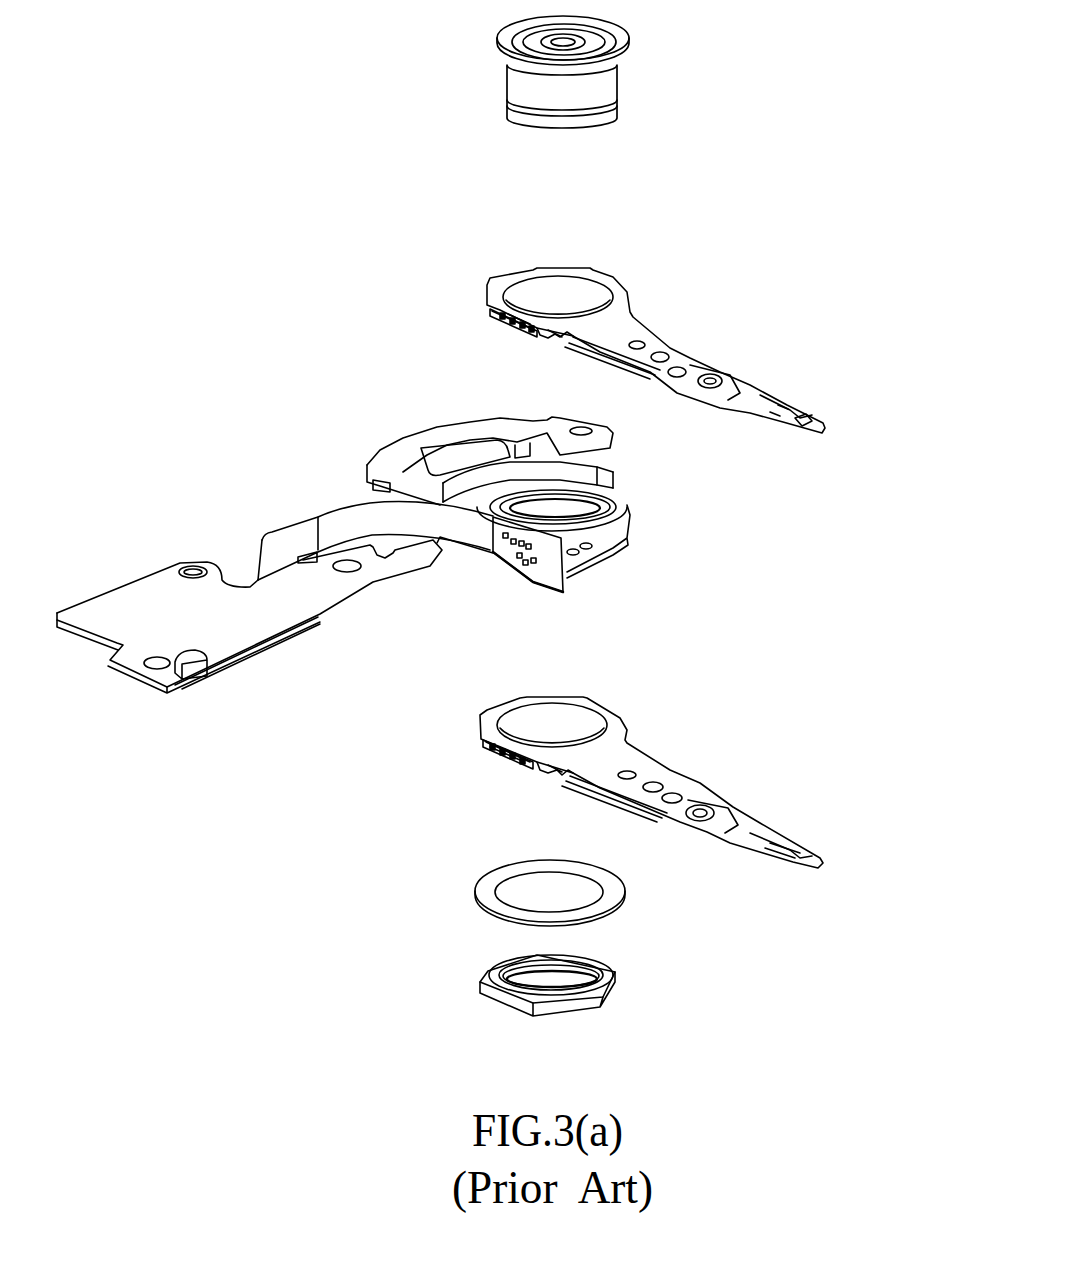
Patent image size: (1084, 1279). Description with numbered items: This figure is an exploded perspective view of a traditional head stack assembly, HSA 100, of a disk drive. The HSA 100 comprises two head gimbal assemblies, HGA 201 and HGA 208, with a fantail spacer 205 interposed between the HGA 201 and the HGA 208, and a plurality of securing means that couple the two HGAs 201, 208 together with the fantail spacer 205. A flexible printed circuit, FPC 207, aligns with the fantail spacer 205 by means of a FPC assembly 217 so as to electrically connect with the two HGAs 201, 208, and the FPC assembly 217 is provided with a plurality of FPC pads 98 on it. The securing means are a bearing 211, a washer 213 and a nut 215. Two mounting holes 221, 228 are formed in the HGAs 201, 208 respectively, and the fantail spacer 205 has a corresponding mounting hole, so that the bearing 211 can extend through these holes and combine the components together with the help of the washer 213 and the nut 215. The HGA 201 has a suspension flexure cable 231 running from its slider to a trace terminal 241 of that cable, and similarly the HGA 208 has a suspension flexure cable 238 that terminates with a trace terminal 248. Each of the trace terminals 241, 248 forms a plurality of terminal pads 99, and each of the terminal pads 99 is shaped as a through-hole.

The HSA 100 is at (240, 132).
The head gimbal assembly 201 is at (665, 509).
The fantail spacer 205 is at (400, 447).
The flexible printed circuit 207 is at (380, 520).
The head gimbal assembly 208 is at (623, 776).
The bearing 211 is at (585, 90).
The washer 213 is at (613, 892).
The nut 215 is at (620, 985).
The FPC assembly 217 is at (553, 591).
The mounting hole 221 is at (561, 291).
The mounting hole 228 is at (540, 730).
The suspension flexure cable 231 is at (557, 342).
The suspension flexure cable 238 is at (553, 777).
The trace terminal 241 is at (487, 308).
The trace terminal 248 is at (490, 745).
The FPC pads 98 is at (530, 570).
The terminal pads 99 is at (503, 317).